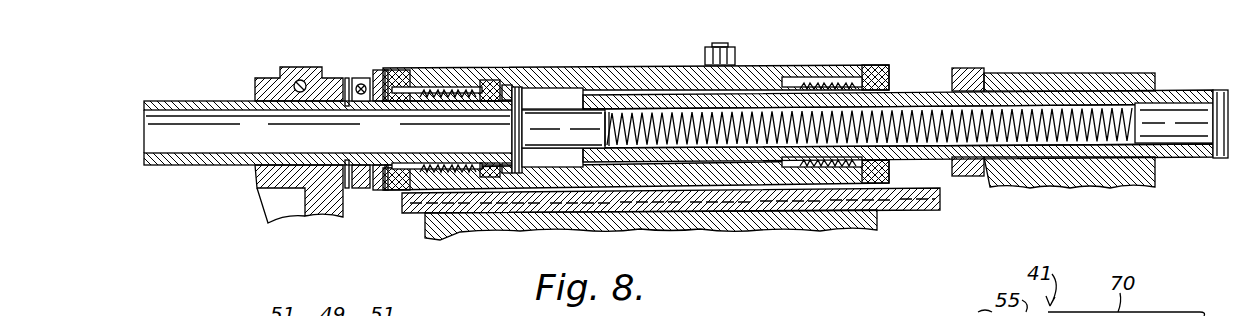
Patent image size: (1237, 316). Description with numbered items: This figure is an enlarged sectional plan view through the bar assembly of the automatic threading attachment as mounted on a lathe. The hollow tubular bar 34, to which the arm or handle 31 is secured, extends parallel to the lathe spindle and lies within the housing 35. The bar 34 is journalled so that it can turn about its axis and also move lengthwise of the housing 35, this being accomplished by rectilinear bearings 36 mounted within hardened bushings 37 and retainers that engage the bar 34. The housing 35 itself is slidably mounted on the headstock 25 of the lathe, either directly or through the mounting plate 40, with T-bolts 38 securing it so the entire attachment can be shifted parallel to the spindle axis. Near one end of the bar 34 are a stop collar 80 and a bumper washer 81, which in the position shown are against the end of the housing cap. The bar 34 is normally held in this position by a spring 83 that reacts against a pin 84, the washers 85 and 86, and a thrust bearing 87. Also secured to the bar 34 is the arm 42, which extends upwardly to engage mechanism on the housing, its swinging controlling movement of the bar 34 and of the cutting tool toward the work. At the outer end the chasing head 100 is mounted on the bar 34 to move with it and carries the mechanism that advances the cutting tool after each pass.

The headstock 25 is at (822, 230).
The arm or handle 31 is at (280, 224).
The bar 34 is at (158, 100).
The housing 35 is at (637, 66).
The rectilinear bearings 36 is at (474, 72).
The hardened bushings 37 is at (428, 72).
The T-bolts 38 is at (728, 46).
The mounting plate 40 is at (898, 210).
The arm 42 is at (968, 68).
The stop collar 80 is at (355, 78).
The bumper washer 81 is at (382, 70).
The spring 83 is at (933, 92).
The pin 84 is at (514, 132).
The washer 85 is at (511, 68).
The washer 86 is at (490, 68).
The thrust bearing 87 is at (508, 66).
The chasing head 100 is at (1079, 62).